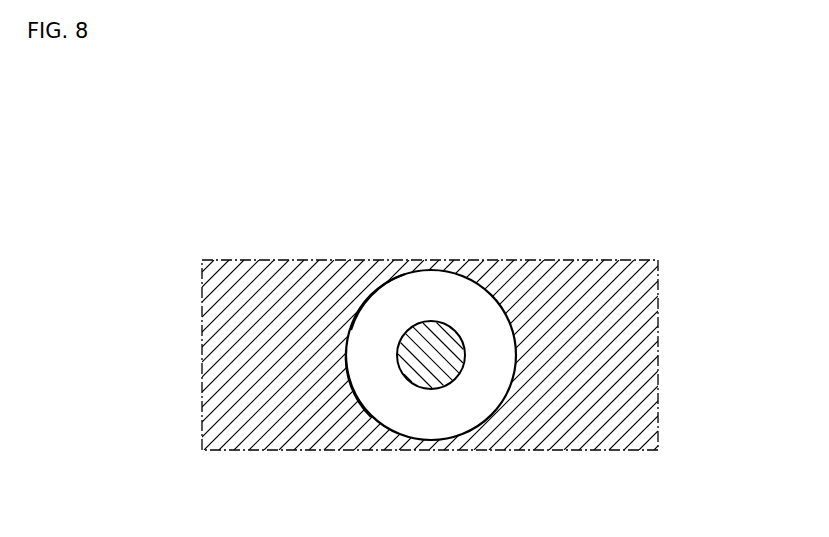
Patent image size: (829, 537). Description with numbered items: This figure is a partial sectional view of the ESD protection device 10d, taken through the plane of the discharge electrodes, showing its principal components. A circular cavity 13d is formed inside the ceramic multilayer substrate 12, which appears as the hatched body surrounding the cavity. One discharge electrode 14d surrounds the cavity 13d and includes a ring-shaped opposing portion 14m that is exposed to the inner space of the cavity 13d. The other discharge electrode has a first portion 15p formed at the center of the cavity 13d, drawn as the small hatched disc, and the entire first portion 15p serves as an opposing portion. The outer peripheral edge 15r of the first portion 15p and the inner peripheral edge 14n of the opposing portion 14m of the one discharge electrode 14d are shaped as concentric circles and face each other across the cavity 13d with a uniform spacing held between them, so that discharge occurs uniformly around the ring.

The ESD protection device 10d is at (713, 143).
The ceramic multilayer substrate 12 is at (583, 274).
The cavity 13d is at (405, 298).
The discharge electrode 14d is at (232, 258).
The opposing portion 14m is at (358, 297).
The inner peripheral edge 14n is at (347, 357).
The first portion 15p is at (439, 328).
The outer peripheral edge 15r is at (463, 367).